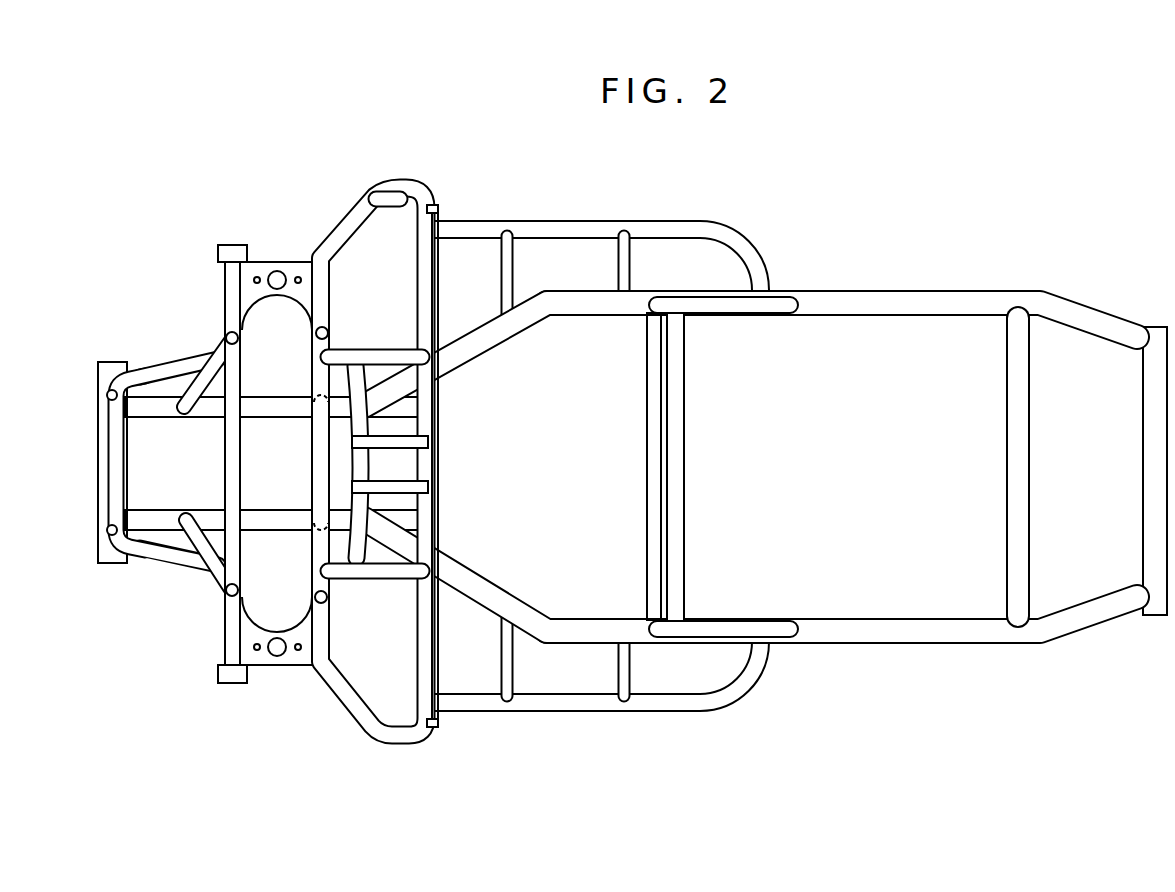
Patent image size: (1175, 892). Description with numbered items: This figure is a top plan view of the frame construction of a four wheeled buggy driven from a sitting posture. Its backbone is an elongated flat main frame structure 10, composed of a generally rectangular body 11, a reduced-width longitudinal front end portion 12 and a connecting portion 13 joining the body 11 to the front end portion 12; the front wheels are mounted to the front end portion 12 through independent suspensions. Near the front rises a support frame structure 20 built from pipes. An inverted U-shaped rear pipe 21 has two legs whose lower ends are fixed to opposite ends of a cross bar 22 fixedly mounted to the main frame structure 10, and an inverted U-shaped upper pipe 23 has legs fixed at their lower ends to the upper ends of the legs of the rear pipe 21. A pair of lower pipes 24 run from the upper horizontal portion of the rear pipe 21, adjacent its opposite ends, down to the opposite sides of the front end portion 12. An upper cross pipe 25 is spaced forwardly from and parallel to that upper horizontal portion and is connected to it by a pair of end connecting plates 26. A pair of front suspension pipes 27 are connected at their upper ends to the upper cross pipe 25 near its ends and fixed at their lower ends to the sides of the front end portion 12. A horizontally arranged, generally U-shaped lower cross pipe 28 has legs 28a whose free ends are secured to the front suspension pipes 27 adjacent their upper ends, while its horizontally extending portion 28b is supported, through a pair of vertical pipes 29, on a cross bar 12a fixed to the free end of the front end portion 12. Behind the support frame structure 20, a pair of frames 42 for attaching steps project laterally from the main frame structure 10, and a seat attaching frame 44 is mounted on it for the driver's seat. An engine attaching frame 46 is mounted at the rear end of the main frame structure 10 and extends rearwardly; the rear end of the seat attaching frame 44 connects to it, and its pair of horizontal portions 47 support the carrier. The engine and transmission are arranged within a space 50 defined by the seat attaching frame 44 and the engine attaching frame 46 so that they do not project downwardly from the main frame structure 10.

The main frame structure 10 is at (765, 465).
The body 11 is at (653, 636).
The front end portion 12 is at (277, 533).
The cross bar 12a is at (98, 473).
The connecting portion 13 is at (478, 595).
The support frame structure 20 is at (386, 460).
The rear pipe 21 is at (316, 465).
The cross bar 22 is at (438, 722).
The upper pipe 23 is at (432, 417).
The lower pipes 24 is at (327, 327).
The upper cross pipe 25 is at (224, 281).
The end connecting plates 26 is at (262, 262).
The front suspension pipes 27 is at (197, 375).
The lower cross pipe 28 is at (138, 441).
The legs 28a is at (150, 364).
The horizontally extending portion 28b is at (118, 470).
The vertical pipes 29 is at (108, 401).
The frames 42 is at (643, 222).
The seat attaching frame 44 is at (695, 468).
The engine attaching frame 46 is at (864, 286).
The horizontal portions 47 is at (972, 292).
The space 50 is at (840, 512).